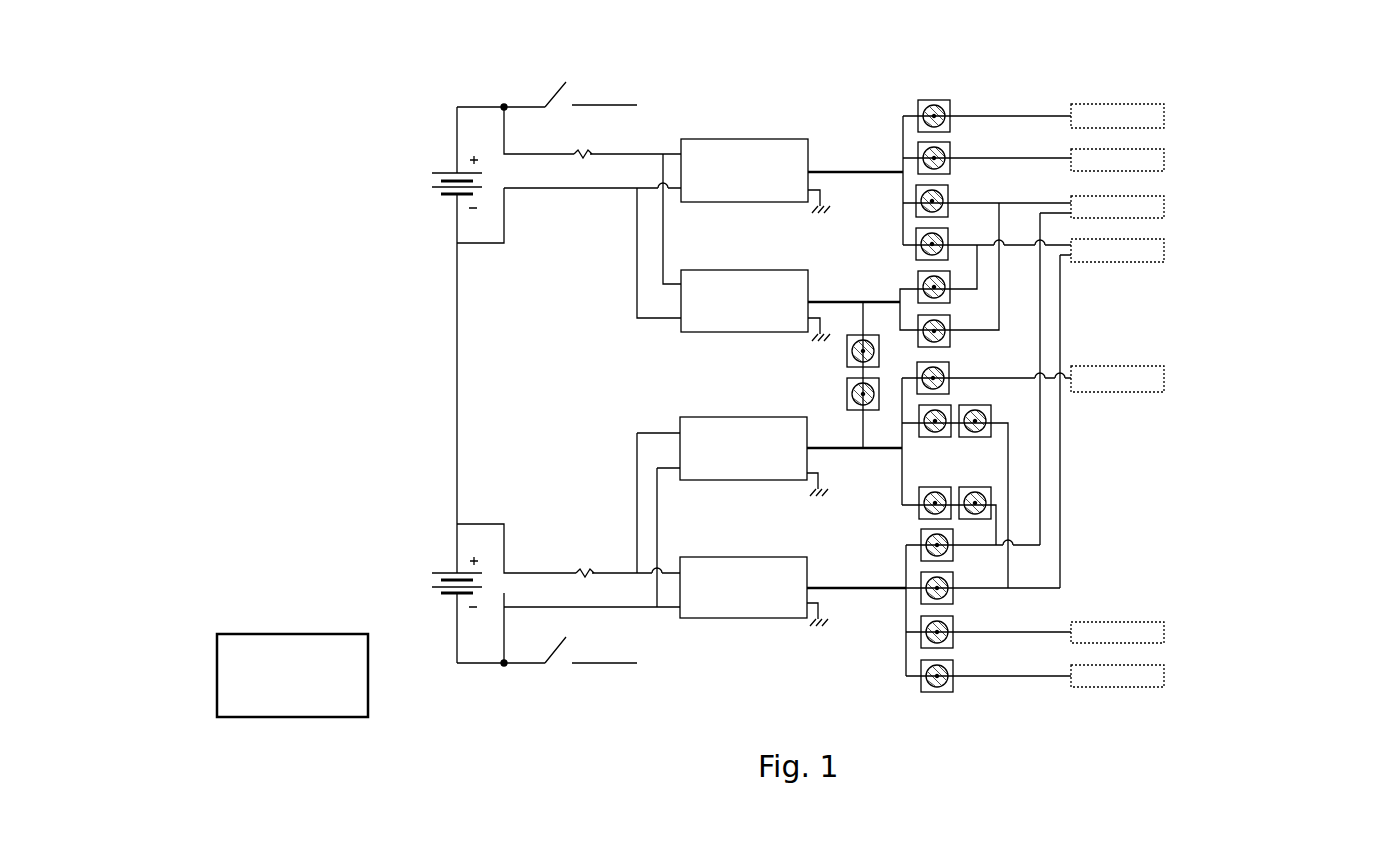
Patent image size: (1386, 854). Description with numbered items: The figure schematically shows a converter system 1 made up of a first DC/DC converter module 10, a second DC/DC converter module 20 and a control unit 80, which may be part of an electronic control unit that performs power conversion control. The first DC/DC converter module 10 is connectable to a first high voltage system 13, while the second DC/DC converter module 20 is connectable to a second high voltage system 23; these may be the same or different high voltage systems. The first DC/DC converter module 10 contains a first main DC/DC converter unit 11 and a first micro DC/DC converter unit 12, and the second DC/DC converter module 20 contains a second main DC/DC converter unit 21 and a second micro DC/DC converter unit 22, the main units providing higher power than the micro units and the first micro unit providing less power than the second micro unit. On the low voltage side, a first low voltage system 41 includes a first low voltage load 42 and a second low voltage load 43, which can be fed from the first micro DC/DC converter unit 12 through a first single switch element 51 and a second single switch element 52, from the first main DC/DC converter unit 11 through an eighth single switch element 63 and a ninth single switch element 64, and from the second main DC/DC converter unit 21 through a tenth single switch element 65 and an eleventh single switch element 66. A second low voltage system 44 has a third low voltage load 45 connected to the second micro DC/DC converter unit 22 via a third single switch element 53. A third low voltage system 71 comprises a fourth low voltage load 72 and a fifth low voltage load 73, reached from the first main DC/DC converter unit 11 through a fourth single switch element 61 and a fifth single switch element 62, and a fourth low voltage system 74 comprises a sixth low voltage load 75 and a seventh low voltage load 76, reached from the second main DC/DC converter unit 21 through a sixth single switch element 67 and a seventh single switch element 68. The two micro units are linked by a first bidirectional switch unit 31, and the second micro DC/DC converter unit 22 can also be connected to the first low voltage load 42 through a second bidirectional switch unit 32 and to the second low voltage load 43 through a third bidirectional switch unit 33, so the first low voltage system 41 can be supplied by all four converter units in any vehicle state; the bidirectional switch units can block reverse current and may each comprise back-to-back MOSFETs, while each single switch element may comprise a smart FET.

The converter system 1 is at (338, 338).
The first DC/DC converter module 10 is at (695, 221).
The first main DC/DC converter unit 11 is at (715, 160).
The first micro DC/DC converter unit 12 is at (710, 290).
The first high voltage system 13 is at (455, 192).
The second DC/DC converter module 20 is at (690, 500).
The second main DC/DC converter unit 21 is at (706, 570).
The second micro DC/DC converter unit 22 is at (690, 428).
The second high voltage system 23 is at (455, 572).
The first bidirectional switch unit 31 is at (843, 371).
The second bidirectional switch unit 32 is at (998, 497).
The third bidirectional switch unit 33 is at (1000, 413).
The first low voltage system 41 is at (1203, 210).
The first low voltage load 42 is at (1160, 210).
The second low voltage load 43 is at (1158, 254).
The second low voltage system 44 is at (1195, 359).
The third low voltage load 45 is at (1158, 380).
The first single switch element 51 is at (950, 340).
The second single switch element 52 is at (918, 292).
The third single switch element 53 is at (948, 386).
The fourth single switch element 61 is at (950, 108).
The fifth single switch element 62 is at (950, 150).
The eighth single switch element 63 is at (948, 195).
The ninth single switch element 64 is at (918, 248).
The tenth single switch element 65 is at (921, 545).
The eleventh single switch element 66 is at (921, 588).
The sixth single switch element 67 is at (921, 622).
The seventh single switch element 68 is at (921, 666).
The third low voltage system 71 is at (1205, 116).
The fourth low voltage load 72 is at (1158, 114).
The fifth low voltage load 73 is at (1158, 164).
The fourth low voltage system 74 is at (1196, 636).
The sixth low voltage load 75 is at (1160, 630).
The seventh low voltage load 76 is at (1160, 677).
The control unit 80 is at (228, 667).